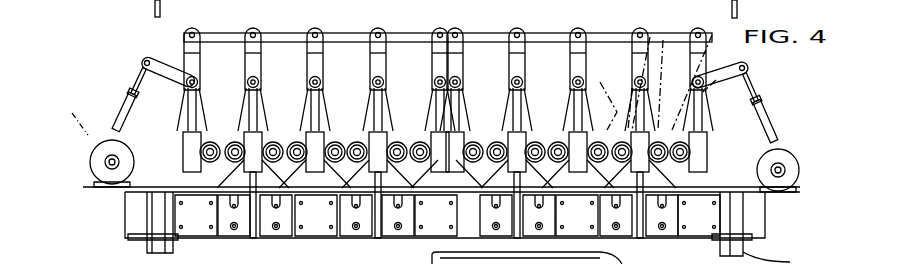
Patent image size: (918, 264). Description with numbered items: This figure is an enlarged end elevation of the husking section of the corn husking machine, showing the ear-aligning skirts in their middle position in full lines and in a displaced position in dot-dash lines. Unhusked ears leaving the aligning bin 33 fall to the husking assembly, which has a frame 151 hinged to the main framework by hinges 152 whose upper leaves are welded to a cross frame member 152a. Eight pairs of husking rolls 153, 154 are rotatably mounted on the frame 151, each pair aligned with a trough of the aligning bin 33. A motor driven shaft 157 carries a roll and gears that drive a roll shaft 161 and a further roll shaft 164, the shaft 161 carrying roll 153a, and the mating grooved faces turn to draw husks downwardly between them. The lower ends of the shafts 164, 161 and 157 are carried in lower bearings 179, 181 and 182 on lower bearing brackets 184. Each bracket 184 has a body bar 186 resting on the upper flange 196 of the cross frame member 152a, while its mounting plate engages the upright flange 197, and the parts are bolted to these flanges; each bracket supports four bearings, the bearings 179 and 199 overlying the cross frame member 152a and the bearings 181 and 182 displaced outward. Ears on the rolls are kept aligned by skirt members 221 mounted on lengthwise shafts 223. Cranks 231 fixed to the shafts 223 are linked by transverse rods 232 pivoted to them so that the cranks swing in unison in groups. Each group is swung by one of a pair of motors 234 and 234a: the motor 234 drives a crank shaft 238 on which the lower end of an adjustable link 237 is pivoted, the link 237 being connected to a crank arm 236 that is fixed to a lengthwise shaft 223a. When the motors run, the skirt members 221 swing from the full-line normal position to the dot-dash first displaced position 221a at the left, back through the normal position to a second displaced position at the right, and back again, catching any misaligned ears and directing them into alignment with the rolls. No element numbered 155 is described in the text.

The aligning bin 33 is at (775, 262).
The frame 151 is at (138, 212).
The hinges 152 is at (145, 245).
The cross frame member 152a is at (317, 228).
The roll 153 is at (225, 130).
The roll 153a is at (253, 240).
The roll 154 is at (243, 98).
The double hanger link 155 is at (512, 10).
The motor driven shaft 157 is at (260, 100).
The roll shaft 161 is at (297, 130).
The roll shaft 164 is at (345, 120).
The lower bearing 179 is at (345, 131).
The lower bearing 181 is at (316, 215).
The lower bearing 182 is at (210, 202).
The lower bearing bracket 184 is at (405, 185).
The body bar 186 is at (492, 190).
The upper flange 196 is at (84, 187).
The upright flange 197 is at (575, 228).
The bearing 199 is at (207, 148).
The skirt member 221 is at (525, 125).
The first displaced position of skirt members 221a is at (604, 90).
The lengthwise shaft 223 is at (512, 82).
The lengthwise shaft 223a is at (200, 35).
The crank 231 is at (518, 62).
The transverse rod 232 is at (327, 35).
The motor 234 is at (95, 158).
The motor 234a is at (800, 180).
The crank arm 236 is at (176, 70).
The adjustable link 237 is at (123, 107).
The crank shaft 238 is at (65, 117).